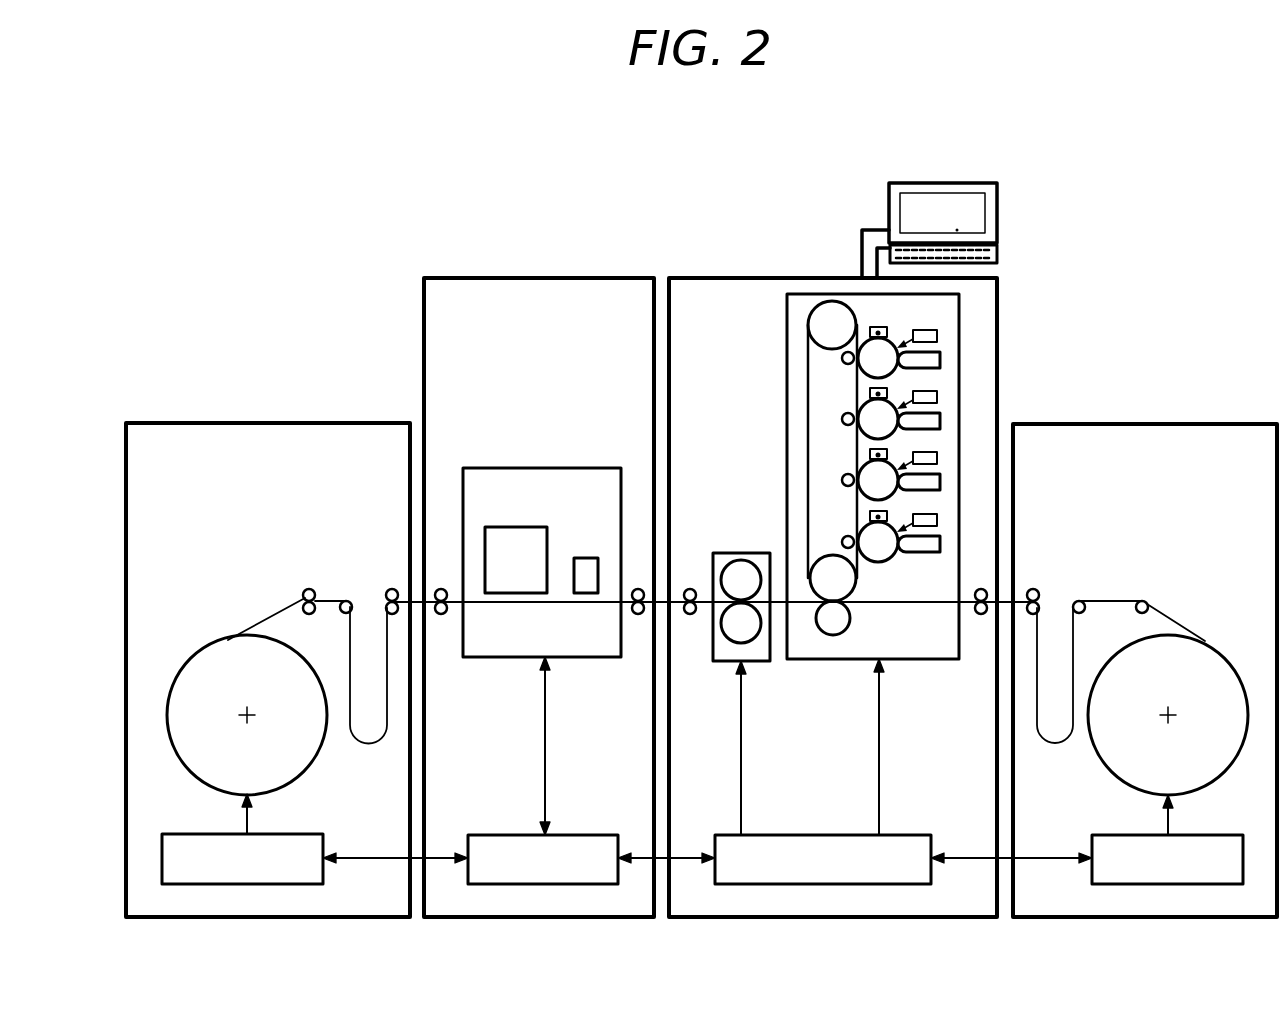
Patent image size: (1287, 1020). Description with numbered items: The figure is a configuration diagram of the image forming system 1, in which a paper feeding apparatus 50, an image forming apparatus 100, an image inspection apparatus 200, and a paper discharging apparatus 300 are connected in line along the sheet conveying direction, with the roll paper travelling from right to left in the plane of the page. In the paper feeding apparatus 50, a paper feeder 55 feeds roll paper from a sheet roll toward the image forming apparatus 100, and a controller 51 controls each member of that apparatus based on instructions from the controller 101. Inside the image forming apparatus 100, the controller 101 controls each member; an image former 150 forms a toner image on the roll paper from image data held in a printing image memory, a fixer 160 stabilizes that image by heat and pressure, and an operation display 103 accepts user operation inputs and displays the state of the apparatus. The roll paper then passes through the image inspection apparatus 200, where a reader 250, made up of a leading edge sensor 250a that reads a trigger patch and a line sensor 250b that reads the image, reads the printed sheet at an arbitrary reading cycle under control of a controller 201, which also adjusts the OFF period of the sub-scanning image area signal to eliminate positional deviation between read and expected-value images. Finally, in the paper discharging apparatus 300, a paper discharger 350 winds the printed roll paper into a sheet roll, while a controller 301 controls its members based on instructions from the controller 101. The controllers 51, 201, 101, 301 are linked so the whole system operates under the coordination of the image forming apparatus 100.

The image forming system 1 is at (700, 132).
The paper discharging apparatus 300 is at (325, 423).
The paper discharger 350 is at (186, 634).
The controller 301 is at (303, 834).
The image inspection apparatus 200 is at (528, 278).
The reader 250 is at (541, 468).
The leading edge sensor 250a is at (588, 558).
The line sensor 250b is at (512, 527).
The controller 201 is at (583, 835).
The image forming apparatus 100 is at (787, 278).
The operation display 103 is at (997, 222).
The fixer 160 is at (735, 553).
The image former 150 is at (922, 643).
The controller 101 is at (815, 835).
The paper feeding apparatus 50 is at (1186, 424).
The paper feeder 55 is at (1215, 641).
The controller 51 is at (1106, 835).